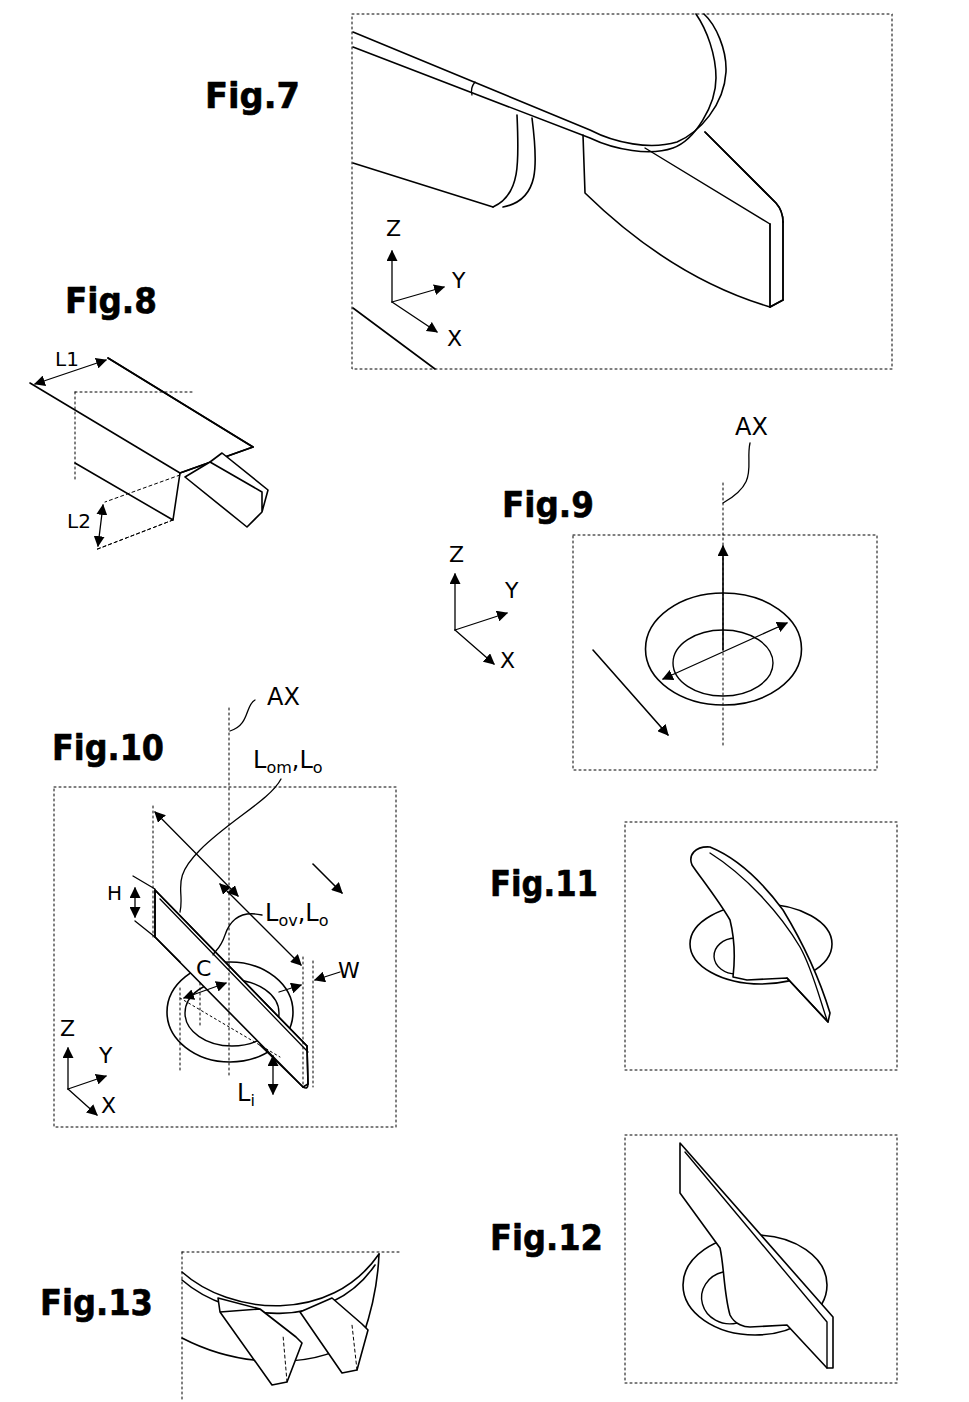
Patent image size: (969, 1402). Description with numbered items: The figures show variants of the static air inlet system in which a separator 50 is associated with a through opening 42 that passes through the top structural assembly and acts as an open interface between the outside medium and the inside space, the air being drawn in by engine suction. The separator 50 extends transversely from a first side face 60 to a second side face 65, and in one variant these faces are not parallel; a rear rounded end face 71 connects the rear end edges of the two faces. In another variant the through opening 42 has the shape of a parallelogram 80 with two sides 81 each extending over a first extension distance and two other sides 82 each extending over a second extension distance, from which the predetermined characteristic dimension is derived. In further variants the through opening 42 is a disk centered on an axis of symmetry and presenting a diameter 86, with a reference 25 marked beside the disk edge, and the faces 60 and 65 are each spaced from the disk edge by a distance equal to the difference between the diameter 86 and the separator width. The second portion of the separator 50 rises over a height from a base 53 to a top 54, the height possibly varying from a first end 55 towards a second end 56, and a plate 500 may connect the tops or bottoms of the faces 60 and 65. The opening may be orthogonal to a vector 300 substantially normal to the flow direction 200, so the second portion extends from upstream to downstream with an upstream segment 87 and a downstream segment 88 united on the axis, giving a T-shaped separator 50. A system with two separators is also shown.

In FIG. 9, the ring diameter 25 is at (788, 650).
In FIG. 7, the through opening 42 is at (545, 196).
In FIG. 8, the through opening 42 is at (217, 526).
In FIG. 9, the through opening 42 is at (682, 622).
In FIG. 7, the separator 50 is at (785, 238).
In FIG. 8, the separator 50 is at (263, 512).
In FIG. 10, the separator 50 is at (329, 1056).
In FIG. 11, the separator 50 is at (800, 1010).
In FIG. 12, the separator 50 is at (795, 1348).
In FIG. 10, the base 53 is at (289, 1078).
In FIG. 10, the top 54 is at (303, 1014).
In FIG. 10, the first end 55 is at (155, 921).
In FIG. 10, the second end 56 is at (315, 1071).
In FIG. 7, the first side face 60 is at (708, 228).
In FIG. 10, the first side face 60 is at (207, 1033).
In FIG. 7, the second side face 65 is at (775, 192).
In FIG. 10, the second side face 65 is at (232, 963).
In FIG. 7, the rear rounded end face 71 is at (782, 300).
In FIG. 8, the parallelogram 80 is at (250, 452).
In FIG. 8, the sides 81 is at (238, 452).
In FIG. 8, the other sides 82 is at (253, 470).
In FIG. 9, the diameter 86 is at (742, 650).
In FIG. 10, the upstream segment 87 is at (158, 938).
In FIG. 10, the downstream segment 88 is at (217, 1060).
In FIG. 9, the flow direction 200 is at (628, 690).
In FIG. 10, the flow direction 200 is at (334, 870).
In FIG. 9, the vector 300 is at (723, 582).
In FIG. 10, the plate 500 is at (313, 1036).